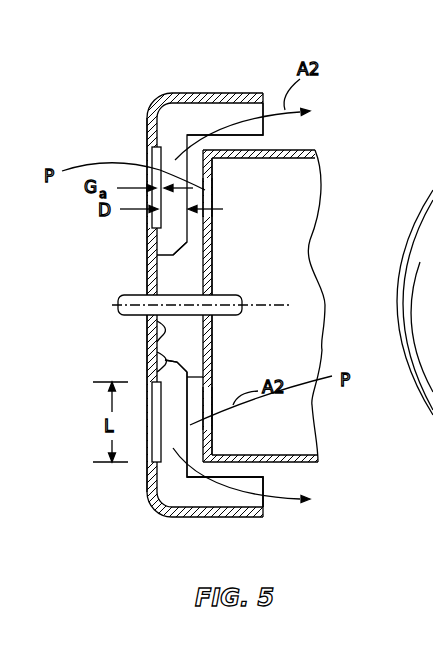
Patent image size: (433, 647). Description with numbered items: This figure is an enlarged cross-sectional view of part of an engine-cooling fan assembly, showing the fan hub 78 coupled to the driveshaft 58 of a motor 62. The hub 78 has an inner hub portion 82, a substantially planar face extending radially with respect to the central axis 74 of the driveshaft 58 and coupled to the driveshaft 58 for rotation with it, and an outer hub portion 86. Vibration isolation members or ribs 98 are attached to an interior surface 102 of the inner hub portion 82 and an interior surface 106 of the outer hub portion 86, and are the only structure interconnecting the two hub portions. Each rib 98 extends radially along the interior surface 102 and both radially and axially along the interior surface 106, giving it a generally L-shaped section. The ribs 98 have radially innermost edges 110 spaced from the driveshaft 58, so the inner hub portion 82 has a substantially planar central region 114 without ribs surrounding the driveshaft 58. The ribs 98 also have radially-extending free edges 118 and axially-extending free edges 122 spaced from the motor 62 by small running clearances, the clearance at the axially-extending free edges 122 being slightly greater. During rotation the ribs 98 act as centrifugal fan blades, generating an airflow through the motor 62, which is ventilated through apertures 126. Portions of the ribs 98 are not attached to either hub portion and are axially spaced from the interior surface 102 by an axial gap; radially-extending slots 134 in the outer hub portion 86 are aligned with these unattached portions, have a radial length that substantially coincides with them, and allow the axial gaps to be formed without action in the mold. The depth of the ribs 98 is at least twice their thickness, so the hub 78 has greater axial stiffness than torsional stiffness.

The driveshaft 58 is at (228, 294).
The motor 62 is at (294, 160).
The central axis 74 is at (276, 300).
The hub 78 is at (213, 290).
The inner hub portion 82 is at (148, 277).
The outer hub portion 86 is at (150, 104).
The vibration isolation members or ribs 98 is at (207, 113).
The interior surface of the inner hub portion 102 is at (157, 360).
The interior surface of the outer hub portion 106 is at (212, 507).
The radially innermost edges 110 is at (185, 248).
The central region 114 is at (148, 326).
The radially-extending free edges 118 is at (192, 162).
The axially-extending free edges 122 is at (247, 133).
The apertures 126 is at (214, 204).
The slots 134 is at (152, 155).